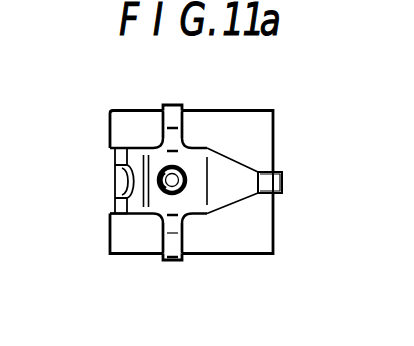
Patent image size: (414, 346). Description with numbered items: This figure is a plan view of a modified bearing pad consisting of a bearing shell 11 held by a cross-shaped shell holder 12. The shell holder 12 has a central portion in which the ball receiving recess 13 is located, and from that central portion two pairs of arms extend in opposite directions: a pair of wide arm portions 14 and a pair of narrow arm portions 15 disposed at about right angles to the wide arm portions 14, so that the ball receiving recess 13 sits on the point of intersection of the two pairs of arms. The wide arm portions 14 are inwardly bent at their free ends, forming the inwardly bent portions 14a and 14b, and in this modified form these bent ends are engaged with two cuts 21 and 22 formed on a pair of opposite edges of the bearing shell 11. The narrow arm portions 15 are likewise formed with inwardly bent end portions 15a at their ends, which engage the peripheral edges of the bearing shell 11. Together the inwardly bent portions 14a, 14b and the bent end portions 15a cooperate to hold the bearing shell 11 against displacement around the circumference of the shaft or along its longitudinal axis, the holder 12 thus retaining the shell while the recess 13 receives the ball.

The bearing shell 11 is at (263, 238).
The shell holder 12 is at (226, 158).
The ball receiving recess 13 is at (162, 195).
The wide arm portions 14 is at (129, 165).
The inwardly bent portion 14a is at (283, 177).
The inwardly bent portion 14b is at (123, 165).
The narrow arm portions 15 is at (172, 138).
The inwardly bent end portions 15a is at (172, 105).
The cut 21 is at (283, 191).
The cut 22 is at (126, 187).